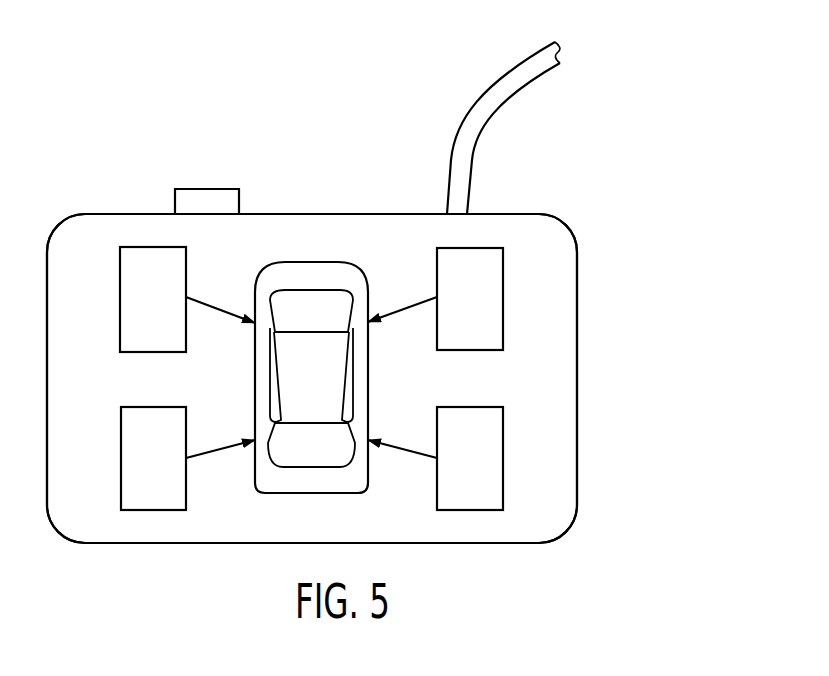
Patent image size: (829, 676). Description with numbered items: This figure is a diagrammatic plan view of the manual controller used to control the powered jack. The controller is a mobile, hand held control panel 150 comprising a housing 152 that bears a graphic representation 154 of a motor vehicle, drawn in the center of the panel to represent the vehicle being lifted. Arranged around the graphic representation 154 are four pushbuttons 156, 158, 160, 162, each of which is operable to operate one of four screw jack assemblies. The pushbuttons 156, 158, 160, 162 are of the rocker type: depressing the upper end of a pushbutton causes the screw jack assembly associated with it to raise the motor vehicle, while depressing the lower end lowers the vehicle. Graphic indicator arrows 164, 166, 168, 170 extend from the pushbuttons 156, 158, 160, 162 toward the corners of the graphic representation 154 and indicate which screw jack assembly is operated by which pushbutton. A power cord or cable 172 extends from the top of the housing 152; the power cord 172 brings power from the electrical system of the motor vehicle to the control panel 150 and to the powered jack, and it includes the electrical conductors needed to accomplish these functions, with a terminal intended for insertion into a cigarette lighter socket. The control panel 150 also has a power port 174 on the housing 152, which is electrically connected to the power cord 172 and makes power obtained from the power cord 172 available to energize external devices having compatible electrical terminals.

The control panel 150 is at (630, 190).
The housing 152 is at (578, 385).
The graphic representation 154 is at (332, 245).
The pushbutton 156 is at (120, 293).
The pushbutton 158 is at (121, 464).
The pushbutton 160 is at (503, 298).
The pushbutton 162 is at (503, 458).
The arrow 164 is at (228, 307).
The arrow 166 is at (208, 445).
The arrow 168 is at (417, 303).
The arrow 170 is at (417, 450).
The power cord 172 is at (515, 62).
The power port 174 is at (218, 163).